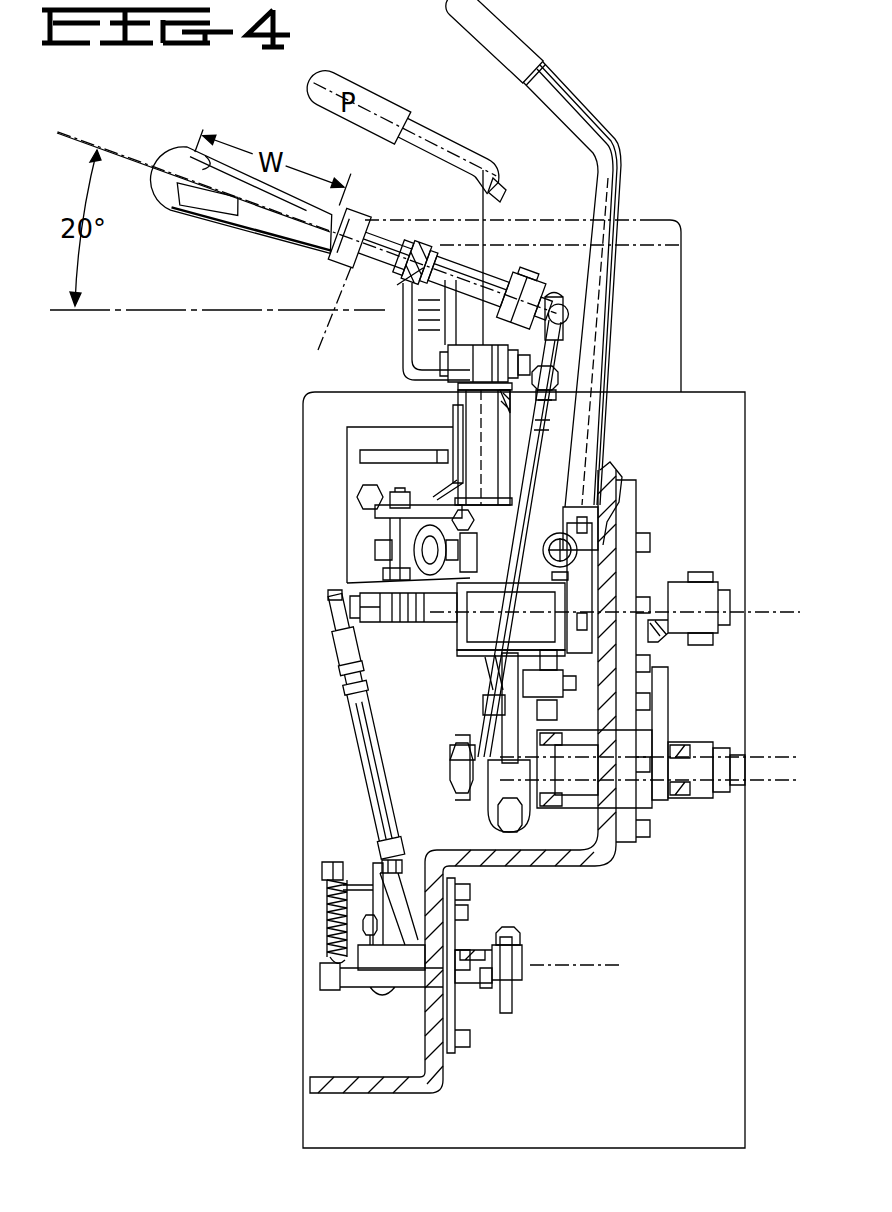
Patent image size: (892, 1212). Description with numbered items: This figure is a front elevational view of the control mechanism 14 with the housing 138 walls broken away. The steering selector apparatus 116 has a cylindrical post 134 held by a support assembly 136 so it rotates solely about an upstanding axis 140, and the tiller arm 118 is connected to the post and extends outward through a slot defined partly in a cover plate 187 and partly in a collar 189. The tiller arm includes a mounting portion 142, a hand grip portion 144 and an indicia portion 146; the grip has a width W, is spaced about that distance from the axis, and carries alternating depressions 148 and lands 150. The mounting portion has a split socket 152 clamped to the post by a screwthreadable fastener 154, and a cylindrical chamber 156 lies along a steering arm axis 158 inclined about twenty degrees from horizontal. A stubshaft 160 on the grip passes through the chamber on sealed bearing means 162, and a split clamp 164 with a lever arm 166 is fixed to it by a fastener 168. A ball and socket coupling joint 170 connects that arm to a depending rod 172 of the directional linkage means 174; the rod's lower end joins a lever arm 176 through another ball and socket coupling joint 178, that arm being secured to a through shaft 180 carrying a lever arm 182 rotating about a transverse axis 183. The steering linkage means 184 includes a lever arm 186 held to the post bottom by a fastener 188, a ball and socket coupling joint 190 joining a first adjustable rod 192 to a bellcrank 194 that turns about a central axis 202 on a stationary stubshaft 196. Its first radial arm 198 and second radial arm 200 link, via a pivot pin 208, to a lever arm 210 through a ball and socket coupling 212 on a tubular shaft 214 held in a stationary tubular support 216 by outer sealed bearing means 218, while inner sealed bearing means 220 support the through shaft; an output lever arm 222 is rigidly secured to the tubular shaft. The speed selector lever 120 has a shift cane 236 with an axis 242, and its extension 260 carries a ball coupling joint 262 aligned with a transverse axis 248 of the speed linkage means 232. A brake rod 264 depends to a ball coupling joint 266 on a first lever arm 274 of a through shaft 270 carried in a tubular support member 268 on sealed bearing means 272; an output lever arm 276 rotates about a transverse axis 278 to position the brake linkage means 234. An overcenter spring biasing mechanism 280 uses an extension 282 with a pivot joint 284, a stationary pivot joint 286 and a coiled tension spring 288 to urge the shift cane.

The control mechanism 14 is at (236, 452).
The steering selector apparatus 116 is at (470, 255).
The tiller arm 118 is at (276, 247).
The speed selector lever 120 is at (605, 123).
The cylindrical post 134 is at (482, 396).
The support assembly 136 is at (441, 437).
The housing 138 is at (303, 670).
The upstanding axis 140 is at (502, 186).
The mounting portion 142 is at (422, 332).
The hand grip portion 144 is at (229, 228).
The indicia portion 146 is at (348, 264).
The depressions 148 is at (190, 162).
The lands 150 is at (210, 214).
The split socket 152 is at (455, 358).
The screwthreadable fastener 154 is at (532, 362).
The cylindrical chamber 156 is at (432, 252).
The steering arm axis 158 is at (95, 138).
The cylindrical stubshaft 160 is at (410, 200).
The sealed bearing means 162 is at (416, 240).
The split clamp 164 is at (530, 300).
The lever arm 166 is at (544, 308).
The screwthreadable fastener 168 is at (510, 266).
The ball and socket coupling joint 170 is at (566, 312).
The depending rod 172 is at (540, 412).
The directional linkage means 174 is at (550, 440).
The lever arm 176 is at (450, 755).
The ball and socket coupling joint 178 is at (473, 780).
The through shaft 180 is at (714, 800).
The lever arm 182 is at (732, 788).
The transverse axis 183 is at (792, 774).
The steering linkage means 184 is at (382, 531).
The lever arm 186 is at (406, 502).
The cover plate 187 is at (662, 222).
The fastener 188 is at (458, 518).
The collar 189 is at (685, 265).
The ball and socket coupling joint 190 is at (376, 560).
The first adjustable rod 192 is at (375, 548).
The bellcrank 194 is at (482, 668).
The stationary stubshaft 196 is at (592, 612).
The first radial arm 198 is at (615, 616).
The second radial arm 200 is at (521, 646).
The central axis 202 is at (490, 652).
The pivot pin 208 is at (576, 684).
The lever arm 210 is at (500, 727).
The ball and socket coupling 212 is at (490, 700).
The tubular shaft 214 is at (553, 740).
The stationary tubular support 216 is at (580, 860).
The outer sealed bearing means 218 is at (556, 810).
The inner sealed bearing means 220 is at (690, 765).
The output lever arm 222 is at (668, 684).
The speed linkage means 232 is at (711, 572).
The brake linkage means 234 is at (366, 790).
The shift cane 236 is at (598, 318).
The longitudinally extending axis 242 is at (578, 549).
The transverse axis 248 is at (792, 610).
The extension 260 is at (426, 620).
The ball coupling joint 262 is at (330, 607).
The brake rod 264 is at (370, 782).
The ball coupling joint 266 is at (430, 928).
The tubular support member 268 is at (448, 965).
The through shaft 270 is at (510, 963).
The sealed bearing means 272 is at (484, 990).
The first lever arm 274 is at (327, 943).
The output lever arm 276 is at (512, 1000).
The transverse axis 278 is at (600, 963).
The overcenter spring biasing mechanism 280 is at (318, 955).
The extension 282 is at (384, 852).
The pivot joint 284 is at (322, 870).
The stationary pivot joint 286 is at (345, 995).
The coiled tension spring 288 is at (327, 912).